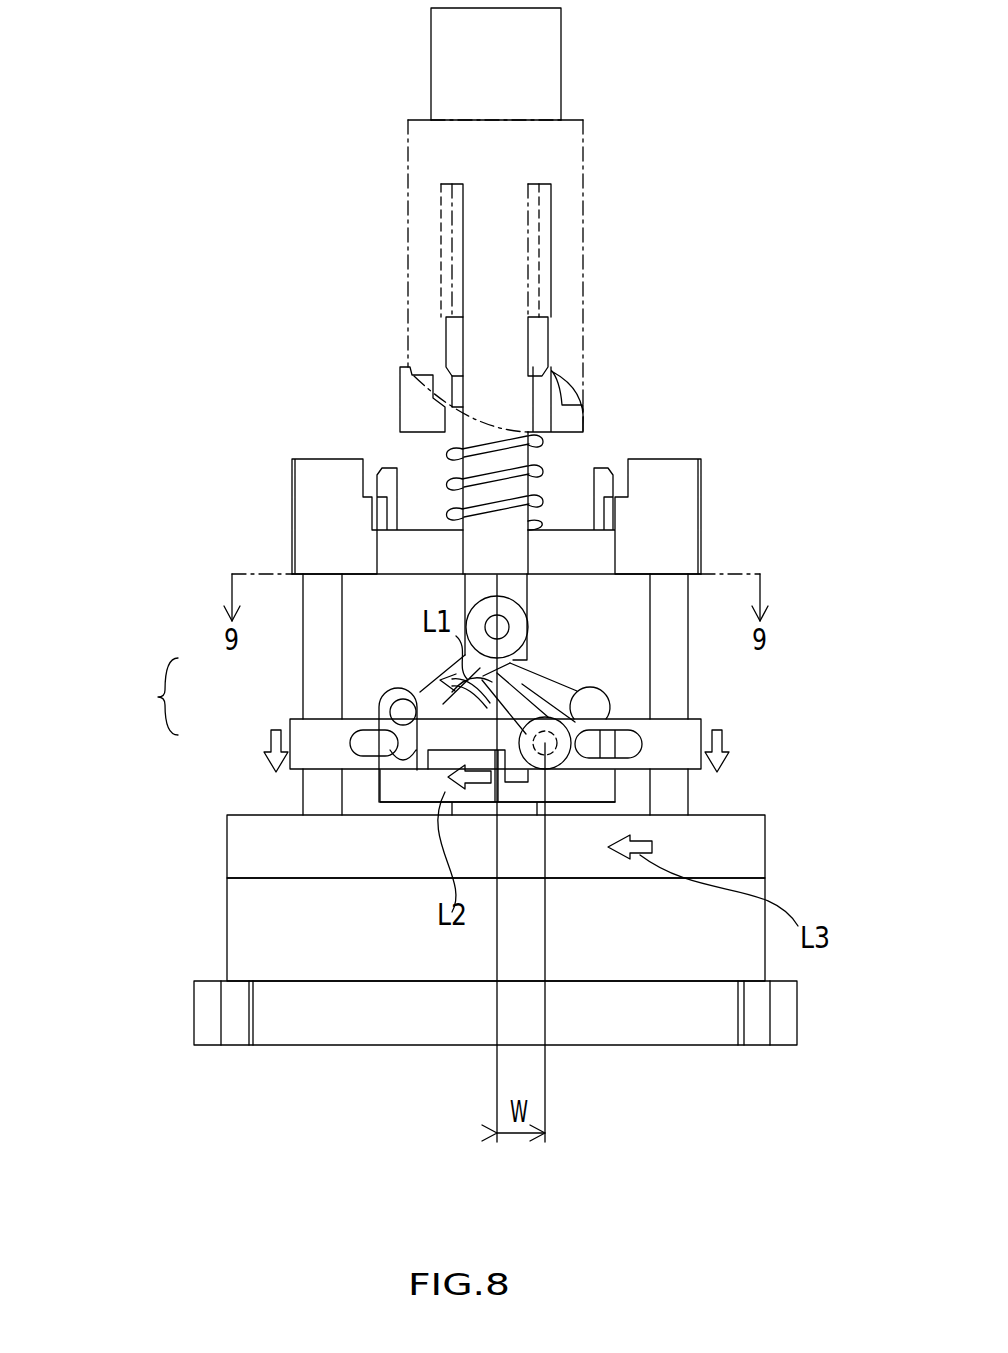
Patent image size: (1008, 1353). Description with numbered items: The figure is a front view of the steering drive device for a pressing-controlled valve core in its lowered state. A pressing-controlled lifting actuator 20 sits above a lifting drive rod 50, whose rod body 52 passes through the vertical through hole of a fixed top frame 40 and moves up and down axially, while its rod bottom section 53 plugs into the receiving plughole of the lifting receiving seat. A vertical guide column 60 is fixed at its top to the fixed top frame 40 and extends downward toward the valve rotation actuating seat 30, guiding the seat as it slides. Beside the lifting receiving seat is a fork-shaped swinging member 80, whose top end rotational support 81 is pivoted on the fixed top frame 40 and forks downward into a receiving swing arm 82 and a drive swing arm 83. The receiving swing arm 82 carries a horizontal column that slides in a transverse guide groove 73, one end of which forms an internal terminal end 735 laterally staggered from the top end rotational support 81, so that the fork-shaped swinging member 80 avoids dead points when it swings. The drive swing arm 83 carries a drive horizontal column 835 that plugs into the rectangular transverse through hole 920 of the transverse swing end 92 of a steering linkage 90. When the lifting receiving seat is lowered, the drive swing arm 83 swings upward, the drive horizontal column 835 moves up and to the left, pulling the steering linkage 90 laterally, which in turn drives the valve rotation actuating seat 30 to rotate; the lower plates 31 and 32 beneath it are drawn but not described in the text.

The pressing-controlled lifting actuator 20 is at (601, 112).
The lifting drive rod 50 is at (535, 456).
The rod body 52 is at (462, 497).
The fixed top frame 40 is at (711, 469).
The vertical guide column 60 is at (303, 607).
The rod bottom section 53 is at (528, 668).
The top end rotational support 81 is at (497, 627).
The receiving swing arm 82 is at (403, 712).
The drive swing arm 83 is at (445, 718).
The drive horizontal column 835 is at (378, 742).
The fork-shaped swinging member 80 is at (154, 696).
The transverse guide groove 73 is at (622, 757).
The internal terminal end 735 is at (549, 731).
The steering linkage 90 is at (426, 789).
The transverse swing end 92 is at (375, 792).
The transverse through hole 920 is at (342, 783).
The valve rotation actuating seat 30 is at (225, 867).
The lower plate 31 is at (225, 951).
The bottom plate 32 is at (313, 1022).